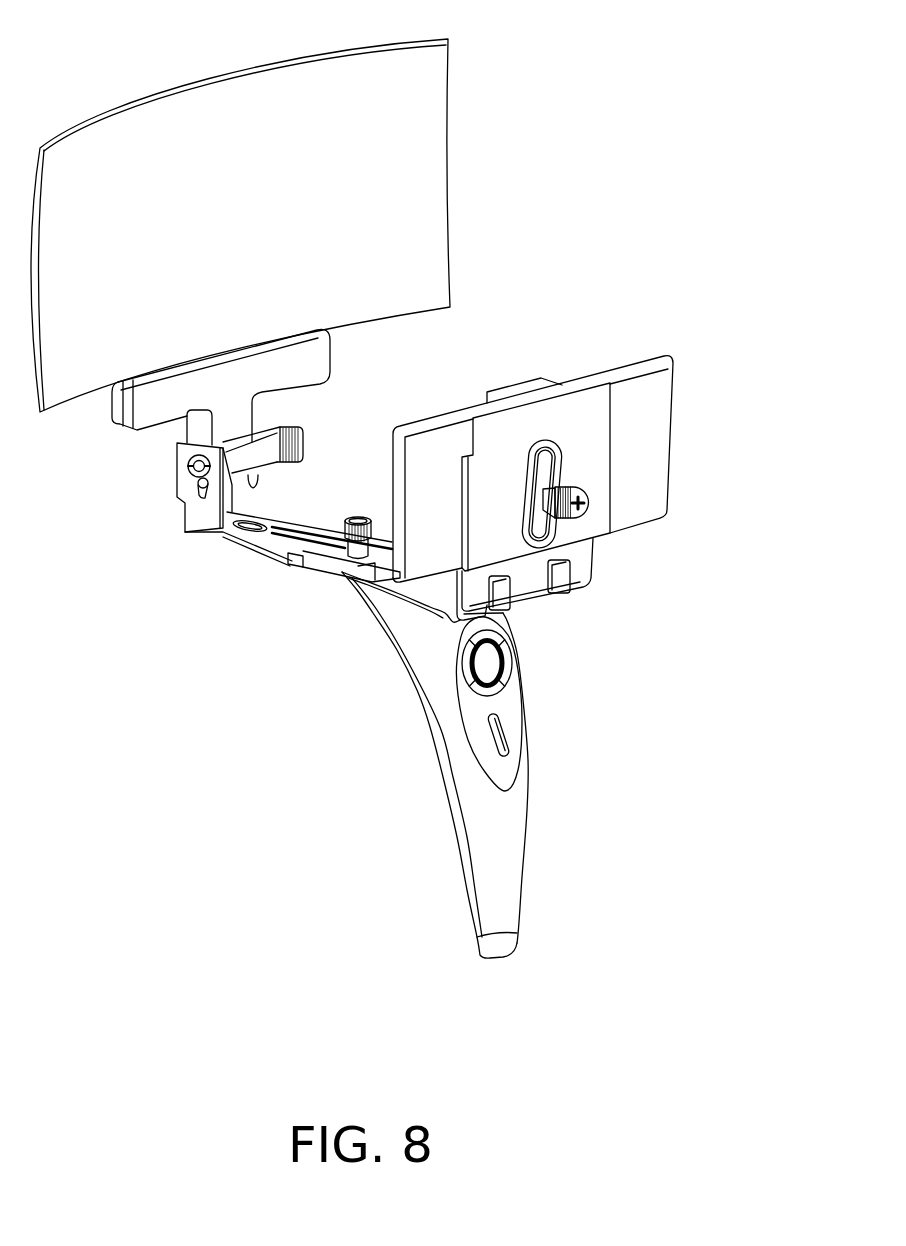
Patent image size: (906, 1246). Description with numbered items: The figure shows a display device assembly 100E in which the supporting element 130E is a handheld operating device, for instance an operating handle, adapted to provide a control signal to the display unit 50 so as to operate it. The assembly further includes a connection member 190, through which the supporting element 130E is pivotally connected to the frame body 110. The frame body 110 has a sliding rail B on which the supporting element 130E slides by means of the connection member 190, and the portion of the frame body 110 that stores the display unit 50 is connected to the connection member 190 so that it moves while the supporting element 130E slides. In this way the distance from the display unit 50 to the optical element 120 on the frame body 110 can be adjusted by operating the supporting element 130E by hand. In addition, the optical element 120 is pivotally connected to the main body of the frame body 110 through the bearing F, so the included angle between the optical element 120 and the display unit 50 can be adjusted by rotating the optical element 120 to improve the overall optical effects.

The display device assembly 100E is at (675, 75).
The optical element 120 is at (420, 183).
The frame body 110 is at (212, 512).
The bearing F is at (197, 466).
The connection member 190 is at (320, 563).
The sliding rail B is at (288, 538).
The display unit 50 is at (650, 445).
The supporting element 130E is at (503, 833).